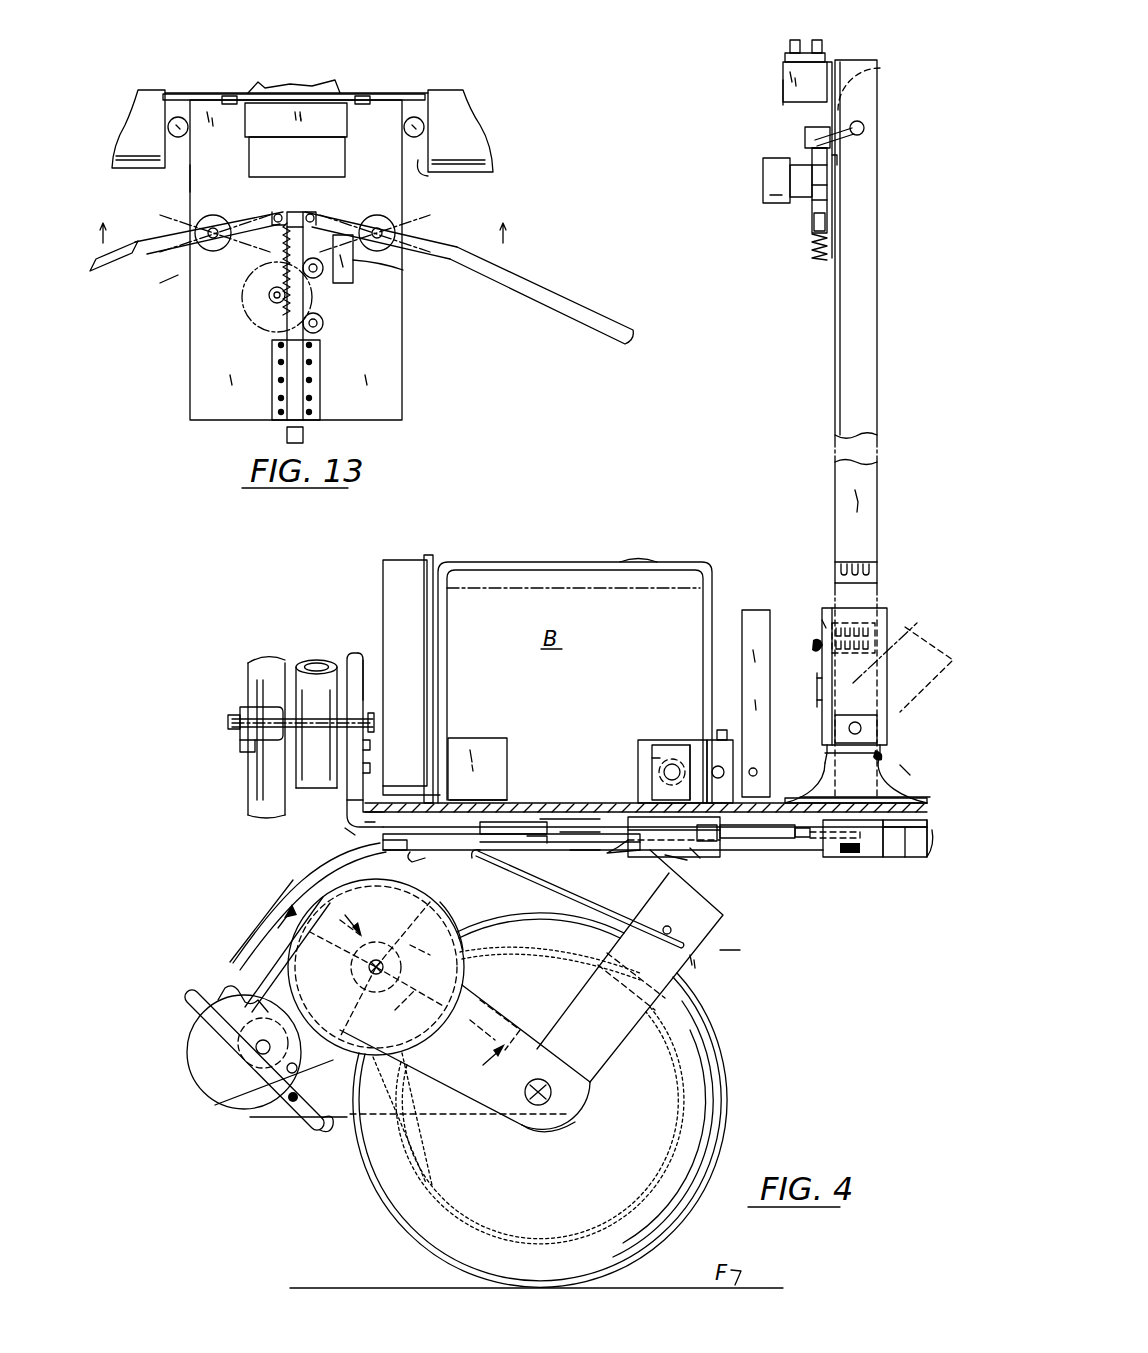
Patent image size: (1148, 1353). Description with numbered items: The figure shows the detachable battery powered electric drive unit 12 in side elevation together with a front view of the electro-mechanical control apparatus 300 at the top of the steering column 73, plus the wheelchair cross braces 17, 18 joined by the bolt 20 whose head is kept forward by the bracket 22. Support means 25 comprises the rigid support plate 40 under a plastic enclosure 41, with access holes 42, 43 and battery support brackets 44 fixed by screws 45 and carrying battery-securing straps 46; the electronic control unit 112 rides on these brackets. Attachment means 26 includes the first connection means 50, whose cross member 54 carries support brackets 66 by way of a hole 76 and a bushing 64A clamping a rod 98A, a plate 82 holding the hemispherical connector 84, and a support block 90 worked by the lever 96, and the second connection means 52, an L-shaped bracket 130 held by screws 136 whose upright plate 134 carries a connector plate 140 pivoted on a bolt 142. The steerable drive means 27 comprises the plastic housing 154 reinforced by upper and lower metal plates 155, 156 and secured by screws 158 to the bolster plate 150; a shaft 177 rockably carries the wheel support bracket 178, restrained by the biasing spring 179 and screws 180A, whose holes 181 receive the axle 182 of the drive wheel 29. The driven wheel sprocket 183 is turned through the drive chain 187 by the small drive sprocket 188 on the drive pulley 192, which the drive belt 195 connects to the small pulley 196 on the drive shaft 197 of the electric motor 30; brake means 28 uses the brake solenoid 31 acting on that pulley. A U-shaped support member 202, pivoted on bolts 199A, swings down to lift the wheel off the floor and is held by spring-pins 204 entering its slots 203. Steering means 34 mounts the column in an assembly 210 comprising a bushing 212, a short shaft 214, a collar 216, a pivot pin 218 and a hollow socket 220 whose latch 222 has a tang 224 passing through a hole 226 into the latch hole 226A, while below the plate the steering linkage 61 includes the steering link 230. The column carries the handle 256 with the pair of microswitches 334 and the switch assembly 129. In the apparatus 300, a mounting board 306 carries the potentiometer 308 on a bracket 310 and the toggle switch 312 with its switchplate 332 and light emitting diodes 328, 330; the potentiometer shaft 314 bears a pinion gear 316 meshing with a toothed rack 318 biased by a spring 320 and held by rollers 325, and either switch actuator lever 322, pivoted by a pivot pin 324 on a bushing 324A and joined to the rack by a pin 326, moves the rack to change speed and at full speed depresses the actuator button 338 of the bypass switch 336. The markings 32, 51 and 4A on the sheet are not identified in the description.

In FIG. 4, the drive unit 12 is at (663, 508).
In FIG. 4, the cross brace 17 is at (250, 672).
In FIG. 4, the cross brace 18 is at (310, 660).
In FIG. 4, the bolt 20 is at (228, 722).
In FIG. 4, the bracket 22 is at (240, 712).
In FIG. 4, the support means 25 is at (912, 767).
In FIG. 4, the attachment means 26 is at (655, 740).
In FIG. 4, the steerable drive means 27 is at (718, 951).
In FIG. 4, the brake means 28 is at (290, 880).
In FIG. 4, the drive wheel 29 is at (727, 1072).
In FIG. 4, the electric motor 30 is at (225, 975).
In FIG. 4, the brake solenoid 31 is at (398, 920).
In FIG. 4, the motor mount arm 32 is at (478, 984).
In FIG. 4, the steering means 34 is at (924, 586).
In FIG. 4, the support plate 40 is at (905, 850).
In FIG. 4, the plastic enclosure 41 is at (930, 855).
In FIG. 4, the access hole 42 is at (562, 808).
In FIG. 4, the access hole 43 is at (842, 798).
In FIG. 4, the battery support brackets 44 is at (475, 738).
In FIG. 4, the screws 45 is at (487, 803).
In FIG. 4, the battery-securing straps 46 is at (548, 562).
In FIG. 4, the first connection means 50 is at (687, 860).
In FIG. 4, the post band 51 is at (835, 565).
In FIG. 4, the second connection means 52 is at (887, 624).
In FIG. 4, the cross member 54 is at (690, 740).
In FIG. 4, the steering linkage 61 is at (770, 850).
In FIG. 4, the bushing 64A is at (727, 768).
In FIG. 4, the support brackets 66 is at (648, 740).
In FIG. 4, the steering column 73 is at (873, 468).
In FIG. 4, the hole 76 is at (652, 758).
In FIG. 4, the plate 82 is at (652, 772).
In FIG. 4, the connector 84 is at (695, 858).
In FIG. 4, the support block 90 is at (720, 740).
In FIG. 4, the lever 96 is at (752, 610).
In FIG. 4, the rod 98A is at (758, 770).
In FIG. 4, the electronic control unit 112 is at (398, 560).
In FIG. 13, the switch assembly 129 is at (175, 283).
In FIG. 4, the switch assembly 129 is at (760, 62).
In FIG. 4, the L-shaped bracket 130 is at (347, 805).
In FIG. 4, the upright plate 134 is at (351, 660).
In FIG. 4, the screws 136 is at (365, 830).
In FIG. 4, the connector plate 140 is at (360, 653).
In FIG. 4, the bolt 142 is at (646, 805).
In FIG. 4, the bolster plate 150 is at (527, 862).
In FIG. 4, the plastic housing 154 is at (265, 906).
In FIG. 4, the upper metal plate 155 is at (392, 850).
In FIG. 4, the lower metal plate 156 is at (560, 850).
In FIG. 4, the screws 158 is at (412, 855).
In FIG. 4, the shaft 177 is at (370, 962).
In FIG. 4, the wheel support bracket 178 is at (605, 1040).
In FIG. 4, the biasing spring 179 is at (585, 865).
In FIG. 4, the screws 180A is at (669, 928).
In FIG. 4, the holes 181 is at (553, 1097).
In FIG. 4, the axle 182 is at (528, 1110).
In FIG. 4, the driven wheel sprocket 183 is at (660, 1132).
In FIG. 4, the drive chain 187 is at (490, 950).
In FIG. 4, the drive sprocket 188 is at (442, 917).
In FIG. 4, the drive pulley 192 is at (430, 886).
In FIG. 4, the drive belt 195 is at (268, 935).
In FIG. 4, the drive pulley 196 is at (243, 1058).
In FIG. 4, the drive shaft 197 is at (333, 1063).
In FIG. 4, the bolts 199A is at (250, 1117).
In FIG. 4, the support member 202 is at (190, 995).
In FIG. 4, the slots 203 is at (330, 1130).
In FIG. 4, the spring-pins 204 is at (222, 1108).
In FIG. 4, the assembly 210 is at (880, 760).
In FIG. 4, the bushing 212 is at (907, 763).
In FIG. 4, the shaft 214 is at (900, 855).
In FIG. 4, the collar 216 is at (870, 713).
In FIG. 4, the pivot pin 218 is at (858, 720).
In FIG. 4, the socket 220 is at (888, 615).
In FIG. 4, the latch 222 is at (817, 700).
In FIG. 4, the tang 224 is at (822, 626).
In FIG. 4, the hole 226 is at (815, 647).
In FIG. 4, the latch hole 226A is at (817, 678).
In FIG. 4, the steering link 230 is at (786, 842).
In FIG. 13, the handle 256 is at (428, 176).
In FIG. 4, the handle 256 is at (853, 58).
In FIG. 13, the electro-mechanical control apparatus 300 is at (186, 370).
In FIG. 4, the electro-mechanical control apparatus 300 is at (778, 113).
In FIG. 13, the mounting board 306 is at (190, 178).
In FIG. 4, the mounting board 306 is at (836, 160).
In FIG. 13, the potentiometer 308 is at (243, 307).
In FIG. 4, the potentiometer 308 is at (763, 178).
In FIG. 13, the bracket 310 is at (320, 368).
In FIG. 4, the bracket 310 is at (812, 215).
In FIG. 13, the toggle switch 312 is at (277, 102).
In FIG. 4, the toggle switch 312 is at (797, 25).
In FIG. 13, the shaft 314 is at (269, 295).
In FIG. 13, the pinion gear 316 is at (284, 276).
In FIG. 13, the rack 318 is at (320, 352).
In FIG. 4, the rack 318 is at (812, 228).
In FIG. 13, the spring 320 is at (320, 390).
In FIG. 4, the spring 320 is at (812, 250).
In FIG. 13, the switch actuator levers 322 is at (137, 237).
In FIG. 4, the switch actuator levers 322 is at (864, 128).
In FIG. 13, the pivot pin 324 is at (213, 215).
In FIG. 4, the pivot pin 324 is at (830, 143).
In FIG. 13, the bushing 324A is at (250, 204).
In FIG. 4, the bushing 324A is at (805, 135).
In FIG. 13, the rollers 325 is at (323, 320).
In FIG. 13, the pin 326 is at (307, 210).
In FIG. 13, the light emitting diode 328 is at (229, 95).
In FIG. 4, the light emitting diode 328 is at (815, 40).
In FIG. 13, the light emitting diode 330 is at (363, 95).
In FIG. 13, the switchplate 332 is at (248, 93).
In FIG. 13, the microswitches 334 is at (178, 117).
In FIG. 13, the bypass switch 336 is at (357, 280).
In FIG. 13, the actuator button 338 is at (358, 272).
In FIG. 4, the section arrow 4A is at (386, 996).